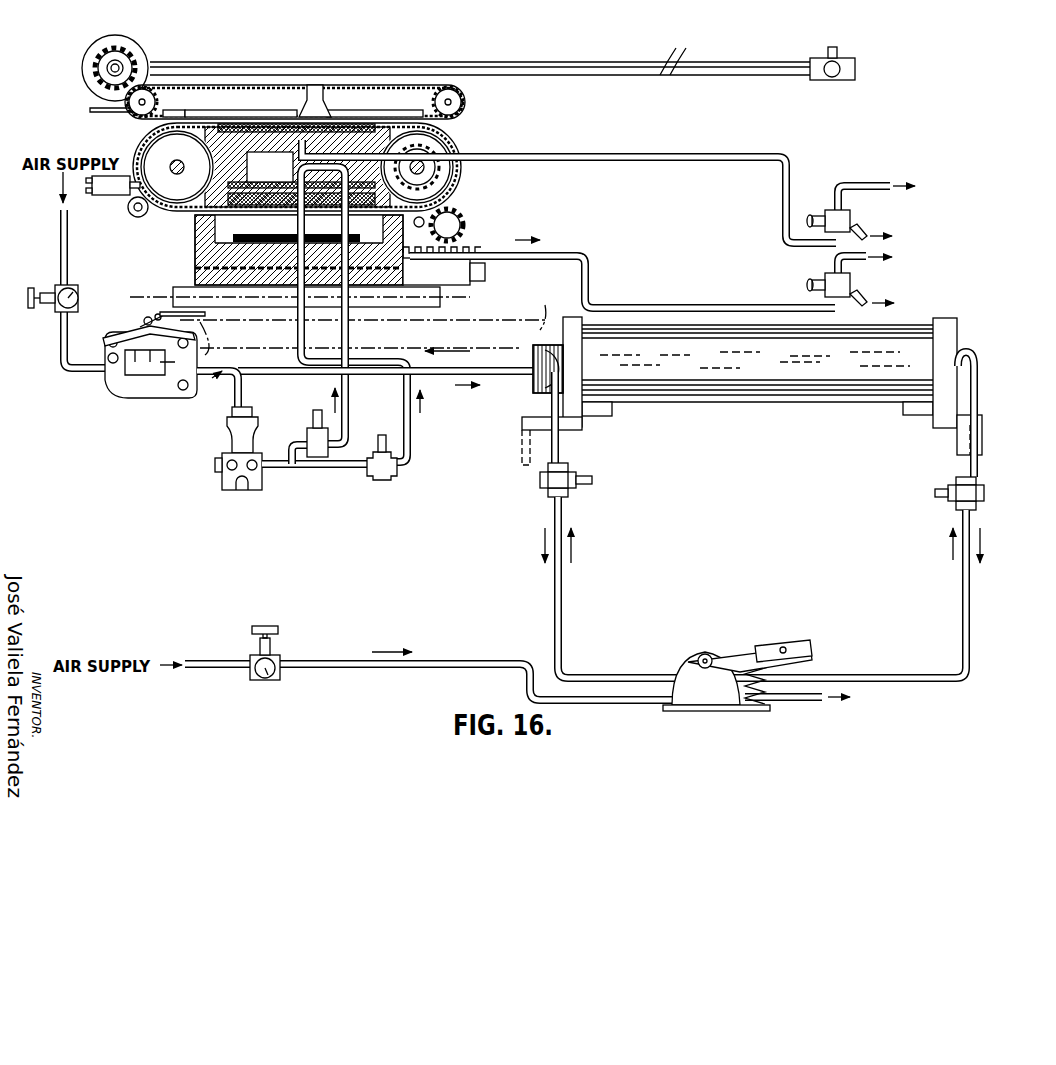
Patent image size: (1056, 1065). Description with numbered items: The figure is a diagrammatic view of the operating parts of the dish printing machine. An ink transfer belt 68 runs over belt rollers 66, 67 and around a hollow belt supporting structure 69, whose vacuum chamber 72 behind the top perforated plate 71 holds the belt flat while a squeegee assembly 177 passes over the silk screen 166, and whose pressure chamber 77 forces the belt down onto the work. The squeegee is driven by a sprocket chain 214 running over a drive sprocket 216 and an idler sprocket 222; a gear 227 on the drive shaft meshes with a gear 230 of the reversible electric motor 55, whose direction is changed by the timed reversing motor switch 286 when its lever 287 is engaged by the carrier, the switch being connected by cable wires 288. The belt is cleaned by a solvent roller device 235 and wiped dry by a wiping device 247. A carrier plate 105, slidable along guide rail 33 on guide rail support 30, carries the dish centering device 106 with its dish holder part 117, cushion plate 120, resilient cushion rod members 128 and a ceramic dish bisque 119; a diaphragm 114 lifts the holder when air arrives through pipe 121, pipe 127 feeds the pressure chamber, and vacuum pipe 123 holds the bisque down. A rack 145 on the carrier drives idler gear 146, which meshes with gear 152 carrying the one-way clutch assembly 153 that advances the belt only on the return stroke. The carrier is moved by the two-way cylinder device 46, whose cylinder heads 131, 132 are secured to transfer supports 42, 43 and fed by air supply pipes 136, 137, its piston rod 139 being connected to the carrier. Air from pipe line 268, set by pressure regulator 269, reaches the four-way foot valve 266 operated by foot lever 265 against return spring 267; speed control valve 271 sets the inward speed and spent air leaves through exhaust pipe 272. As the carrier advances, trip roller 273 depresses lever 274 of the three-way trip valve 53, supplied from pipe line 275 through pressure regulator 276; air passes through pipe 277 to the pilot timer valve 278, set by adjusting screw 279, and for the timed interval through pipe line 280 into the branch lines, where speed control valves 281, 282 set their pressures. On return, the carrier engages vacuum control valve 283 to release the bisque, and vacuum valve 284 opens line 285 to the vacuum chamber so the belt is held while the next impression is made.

The cable wires 288 is at (664, 62).
The timed-controlled reversing electric motor switch 286 is at (855, 70).
The lever 287 is at (839, 40).
The gear 230 is at (95, 70).
The electric motor 55 is at (82, 90).
The sprocket drive gear 227 is at (105, 102).
The drive sprocket 216 is at (138, 110).
The squeegee driving sprocket chain 214 is at (240, 86).
The idler sprocket 222 is at (462, 100).
The transfer belt supporting structure 69 is at (238, 135).
The vacuum chamber 72 is at (270, 128).
The squeegee assembly 177 is at (316, 85).
The ink transfer belt 68 is at (322, 125).
The top perforated plate 71 is at (342, 125).
The silk screen 166 is at (368, 118).
The ink transfer belt roller 67 is at (455, 150).
The ink transfer belt roller 66 is at (177, 167).
The one-way clutch assembly 153 is at (455, 181).
The gear 152 is at (448, 140).
The pressure chamber 77 is at (265, 196).
The dish centering device 106 is at (195, 230).
The cushion plate 120 is at (262, 240).
The cushion rod members 128 is at (222, 240).
The ceramic dish bisque 119 is at (320, 226).
The dish holder part 117 is at (210, 262).
The idler gear 146 is at (440, 222).
The diaphragm 114 is at (405, 264).
The rack 145 is at (476, 270).
The carrier plate 105 is at (455, 290).
The guide rail 33 is at (520, 305).
The vacuum line 285 is at (572, 152).
The vacuum valve 284 is at (852, 220).
The vacuum pipe 123 is at (562, 252).
The vacuum control valve 283 is at (852, 284).
The pipe 127 is at (350, 330).
The piston rod 139 is at (510, 376).
The pipe 121 is at (405, 462).
The wiping device 247 is at (102, 195).
The solvent-containing roller device 235 is at (136, 218).
The supply pipe line 275 is at (60, 245).
The pressure regulator 276 is at (56, 313).
The three-way trip valve 53 is at (118, 388).
The lever 274 is at (118, 326).
The trip roller 273 is at (145, 315).
The pipe 277 is at (227, 382).
The adjusting screw 279 is at (252, 410).
The three-way pilot timer valve 278 is at (227, 432).
The pipe line 280 is at (276, 468).
The speed control valve 282 is at (312, 410).
The speed control valve 281 is at (378, 440).
The cylinder device 46 is at (778, 400).
The cylinder head 131 is at (575, 318).
The cylinder head 132 is at (950, 330).
The guide rail support 30 is at (520, 336).
The transfer support 42 is at (520, 448).
The transfer support 43 is at (950, 440).
The exhaust pipe 272 is at (570, 468).
The speed control valve 271 is at (948, 498).
The air supply pipe 136 is at (555, 588).
The air supply pipe 137 is at (925, 660).
The pipe line 268 is at (215, 669).
The pressure regulator 269 is at (255, 652).
The foot valve 266 is at (698, 700).
The foot lever 265 is at (738, 652).
The return spring 267 is at (800, 660).